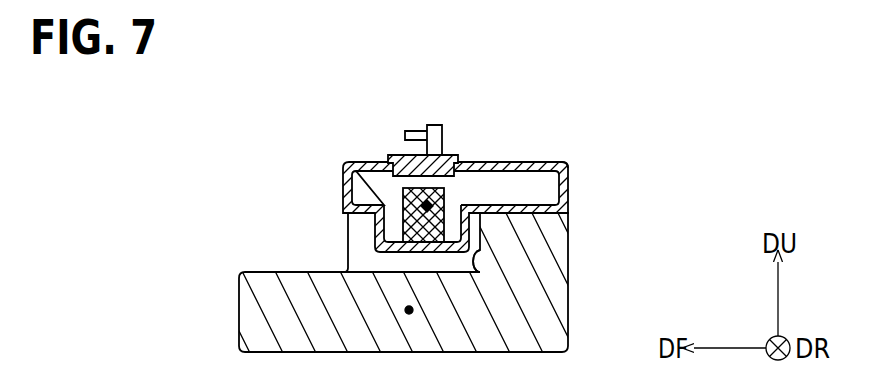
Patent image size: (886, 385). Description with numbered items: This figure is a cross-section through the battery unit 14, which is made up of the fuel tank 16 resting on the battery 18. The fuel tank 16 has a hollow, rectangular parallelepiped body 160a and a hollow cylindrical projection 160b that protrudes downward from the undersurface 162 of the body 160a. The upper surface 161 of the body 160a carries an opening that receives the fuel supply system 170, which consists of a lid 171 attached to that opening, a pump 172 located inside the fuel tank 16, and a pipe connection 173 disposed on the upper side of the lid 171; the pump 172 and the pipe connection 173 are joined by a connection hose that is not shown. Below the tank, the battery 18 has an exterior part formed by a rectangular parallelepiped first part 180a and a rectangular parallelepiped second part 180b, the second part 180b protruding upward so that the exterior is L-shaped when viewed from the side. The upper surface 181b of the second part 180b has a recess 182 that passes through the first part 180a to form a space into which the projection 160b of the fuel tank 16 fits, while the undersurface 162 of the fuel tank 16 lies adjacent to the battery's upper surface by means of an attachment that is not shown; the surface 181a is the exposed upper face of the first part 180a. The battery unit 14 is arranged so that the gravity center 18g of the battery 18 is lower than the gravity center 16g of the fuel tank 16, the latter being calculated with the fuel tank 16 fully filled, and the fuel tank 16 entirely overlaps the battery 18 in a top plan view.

The battery unit 14 is at (737, 141).
The fuel tank 16 is at (457, 190).
The gravity center of the fuel tank 16g is at (427, 204).
The body 160a is at (343, 163).
The projection 160b is at (343, 213).
The upper surface 161 is at (556, 162).
The undersurface 162 is at (553, 221).
The fuel supply system 170 is at (465, 165).
The lid 171 is at (458, 161).
The pump 172 is at (444, 203).
The pipe connection 173 is at (443, 131).
The battery 18 is at (412, 251).
The gravity center of the battery 18g is at (388, 312).
The first part 180a is at (227, 273).
The second part 180b is at (227, 213).
The upper surface of lower base portion 181a is at (264, 272).
The upper surface of the second part 181b is at (566, 203).
The recess 182 is at (481, 273).